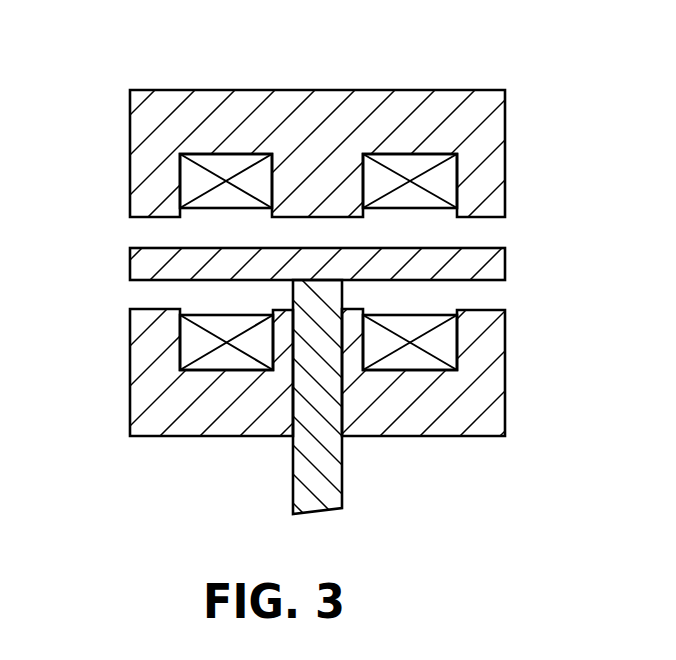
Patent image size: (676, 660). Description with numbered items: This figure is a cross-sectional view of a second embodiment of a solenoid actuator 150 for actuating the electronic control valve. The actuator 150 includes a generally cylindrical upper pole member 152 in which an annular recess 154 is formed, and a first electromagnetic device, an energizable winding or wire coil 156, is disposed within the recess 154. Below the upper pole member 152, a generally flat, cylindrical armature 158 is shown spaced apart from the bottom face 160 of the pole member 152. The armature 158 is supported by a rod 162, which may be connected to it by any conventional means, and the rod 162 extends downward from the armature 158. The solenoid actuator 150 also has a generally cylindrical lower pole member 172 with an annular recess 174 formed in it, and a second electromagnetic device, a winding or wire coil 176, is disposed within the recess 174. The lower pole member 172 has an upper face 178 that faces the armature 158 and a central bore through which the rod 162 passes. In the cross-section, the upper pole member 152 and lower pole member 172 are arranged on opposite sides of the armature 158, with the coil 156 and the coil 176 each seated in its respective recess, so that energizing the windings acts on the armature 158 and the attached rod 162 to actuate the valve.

The solenoid actuator 150 is at (98, 136).
The upper pole member 152 is at (453, 88).
The annular recess 154 is at (188, 214).
The wire coil 156 is at (213, 208).
The armature 158 is at (507, 270).
The bottom face 160 is at (317, 217).
The rod 162 is at (342, 467).
The lower pole member 172 is at (472, 437).
The annular recess 174 is at (187, 310).
The wire coil 176 is at (390, 316).
The upper face 178 is at (280, 308).